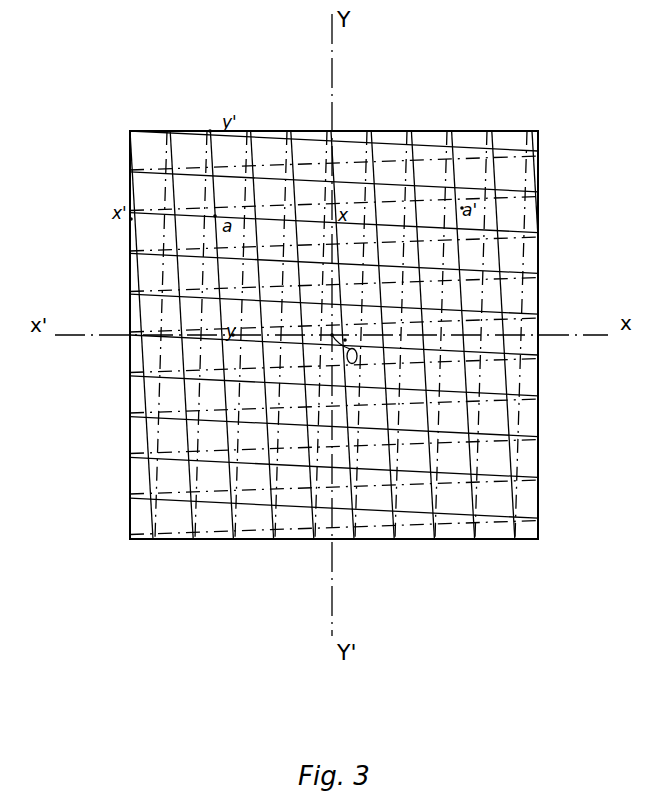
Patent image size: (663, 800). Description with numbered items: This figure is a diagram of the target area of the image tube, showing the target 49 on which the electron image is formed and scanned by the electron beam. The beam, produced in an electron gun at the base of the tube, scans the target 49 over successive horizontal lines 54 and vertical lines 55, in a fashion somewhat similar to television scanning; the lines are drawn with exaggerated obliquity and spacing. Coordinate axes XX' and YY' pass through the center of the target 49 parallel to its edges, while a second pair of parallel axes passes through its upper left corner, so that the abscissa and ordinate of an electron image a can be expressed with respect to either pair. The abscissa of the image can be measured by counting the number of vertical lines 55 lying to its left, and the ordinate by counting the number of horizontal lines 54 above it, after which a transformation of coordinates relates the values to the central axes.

The target 49 is at (170, 539).
The horizontal lines 54 is at (422, 188).
The vertical lines 55 is at (470, 246).